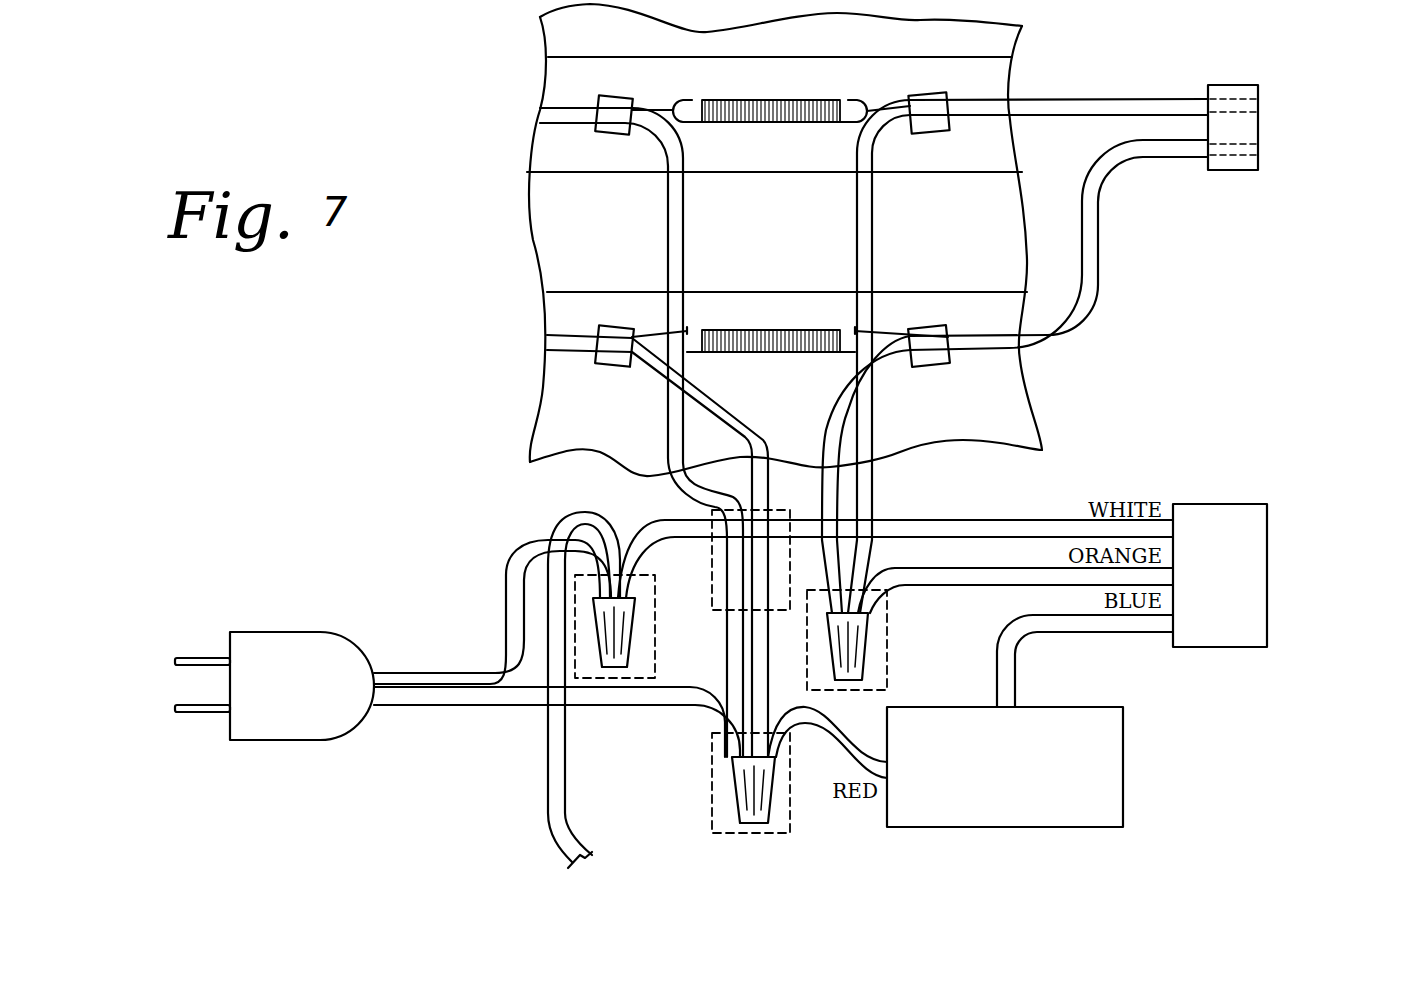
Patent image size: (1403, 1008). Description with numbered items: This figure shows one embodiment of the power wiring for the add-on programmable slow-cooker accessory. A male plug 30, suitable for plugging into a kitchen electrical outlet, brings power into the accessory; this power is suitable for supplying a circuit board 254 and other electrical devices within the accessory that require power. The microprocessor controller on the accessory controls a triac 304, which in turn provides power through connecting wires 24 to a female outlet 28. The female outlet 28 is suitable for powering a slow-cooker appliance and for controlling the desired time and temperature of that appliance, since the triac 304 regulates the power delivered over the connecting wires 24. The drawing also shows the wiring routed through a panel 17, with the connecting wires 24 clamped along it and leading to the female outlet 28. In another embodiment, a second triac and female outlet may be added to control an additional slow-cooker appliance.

The glass sheet / window panel 17 is at (1015, 228).
The connecting wires 24 is at (1040, 97).
The female outlet 28 is at (1250, 85).
The male plug 30 is at (317, 630).
The triac 304 is at (1250, 626).
The circuit board 254 is at (1103, 753).